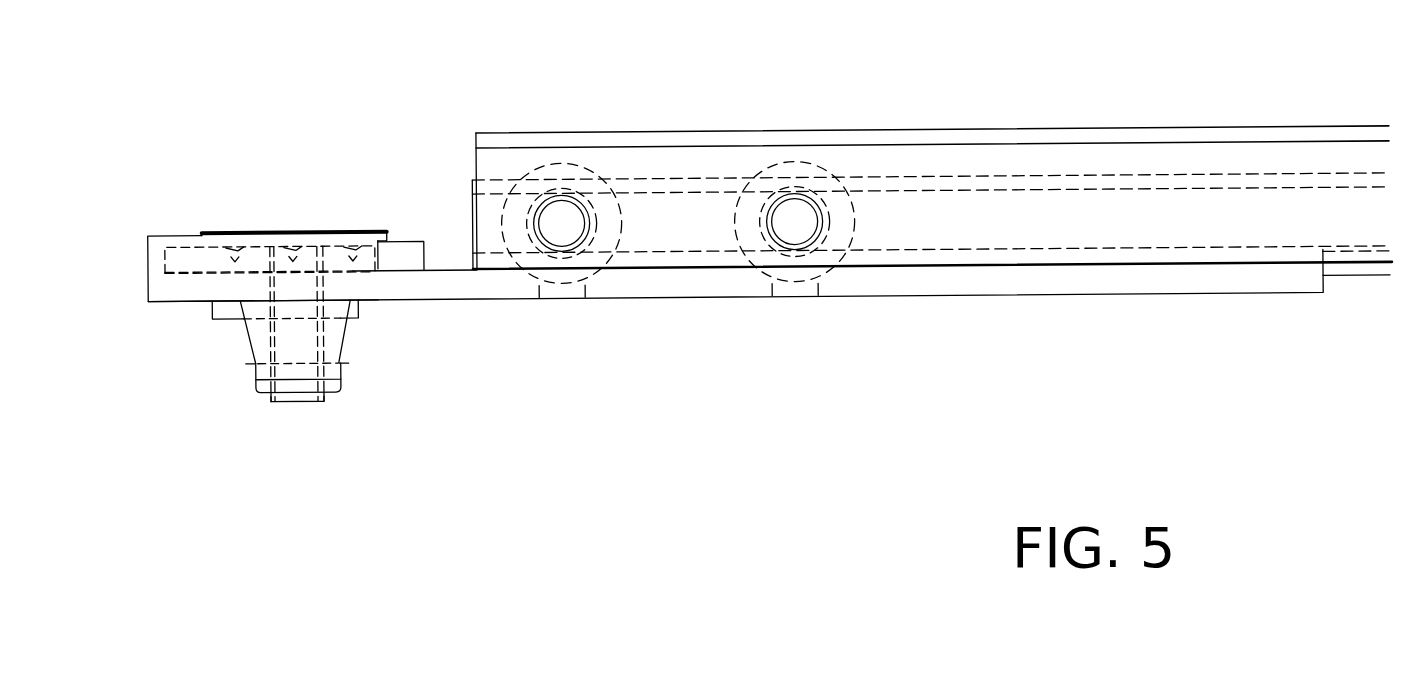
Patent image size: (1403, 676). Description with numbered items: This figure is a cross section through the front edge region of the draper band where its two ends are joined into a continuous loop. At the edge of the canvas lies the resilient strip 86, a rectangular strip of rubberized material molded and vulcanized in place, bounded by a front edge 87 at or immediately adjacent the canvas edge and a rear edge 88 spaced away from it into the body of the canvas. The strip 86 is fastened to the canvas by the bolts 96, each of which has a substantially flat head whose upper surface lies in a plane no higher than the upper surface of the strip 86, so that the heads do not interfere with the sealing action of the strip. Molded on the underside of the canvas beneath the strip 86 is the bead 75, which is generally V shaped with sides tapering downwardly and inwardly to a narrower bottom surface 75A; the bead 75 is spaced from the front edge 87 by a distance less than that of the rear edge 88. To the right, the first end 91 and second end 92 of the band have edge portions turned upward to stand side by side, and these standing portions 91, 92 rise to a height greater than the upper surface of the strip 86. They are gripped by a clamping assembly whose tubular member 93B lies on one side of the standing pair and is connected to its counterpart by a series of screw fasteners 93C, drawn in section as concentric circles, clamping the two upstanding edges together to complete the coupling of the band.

The bead 75 is at (352, 320).
The bottom surface 75A is at (307, 378).
The strip 86 is at (185, 247).
The front edge 87 is at (145, 256).
The rear edge 88 is at (428, 247).
The first end 91 is at (769, 183).
The second end 92 is at (767, 137).
The tubular member 93B is at (960, 165).
The screw fasteners 93C is at (833, 237).
The bolts 96 is at (301, 210).